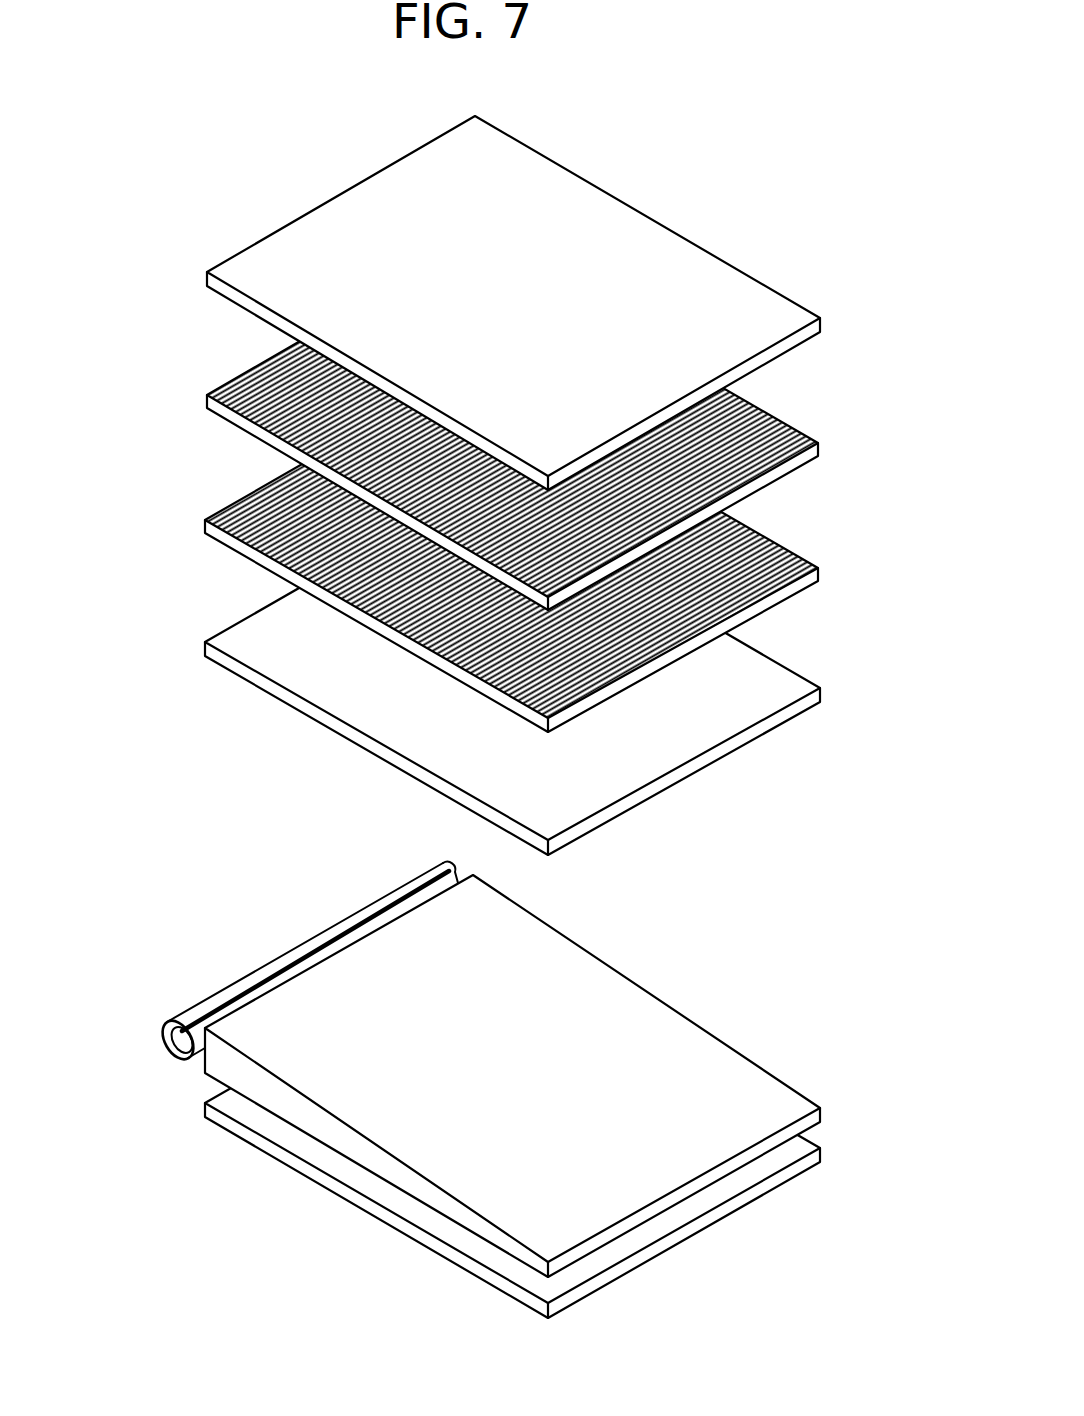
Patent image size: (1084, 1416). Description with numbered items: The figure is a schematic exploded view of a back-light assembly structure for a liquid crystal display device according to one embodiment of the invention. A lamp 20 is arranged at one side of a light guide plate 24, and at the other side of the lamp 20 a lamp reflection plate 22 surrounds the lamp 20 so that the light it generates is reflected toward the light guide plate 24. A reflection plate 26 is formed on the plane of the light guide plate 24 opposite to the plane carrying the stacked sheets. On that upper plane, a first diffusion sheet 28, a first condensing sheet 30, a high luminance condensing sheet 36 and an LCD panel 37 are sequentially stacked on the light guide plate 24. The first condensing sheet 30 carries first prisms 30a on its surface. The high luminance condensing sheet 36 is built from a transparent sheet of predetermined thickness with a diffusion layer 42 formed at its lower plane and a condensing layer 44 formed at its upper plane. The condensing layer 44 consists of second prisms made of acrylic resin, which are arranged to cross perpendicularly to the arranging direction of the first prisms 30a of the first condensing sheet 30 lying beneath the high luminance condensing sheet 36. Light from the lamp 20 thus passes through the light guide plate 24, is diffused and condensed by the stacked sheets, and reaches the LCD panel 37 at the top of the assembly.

The lamp 20 is at (183, 1042).
The lamp reflection plate 22 is at (183, 1008).
The light guide plate 24 is at (630, 1012).
The reflection plate 26 is at (351, 1196).
The first diffusion sheet 28 is at (822, 692).
The first condensing sheet 30 is at (570, 549).
The first prisms 30a is at (782, 537).
The high luminance condensing sheet 36 is at (561, 426).
The diffusion layer 42 is at (800, 466).
The condensing layer 44 is at (781, 415).
The LCD panel 37 is at (823, 326).